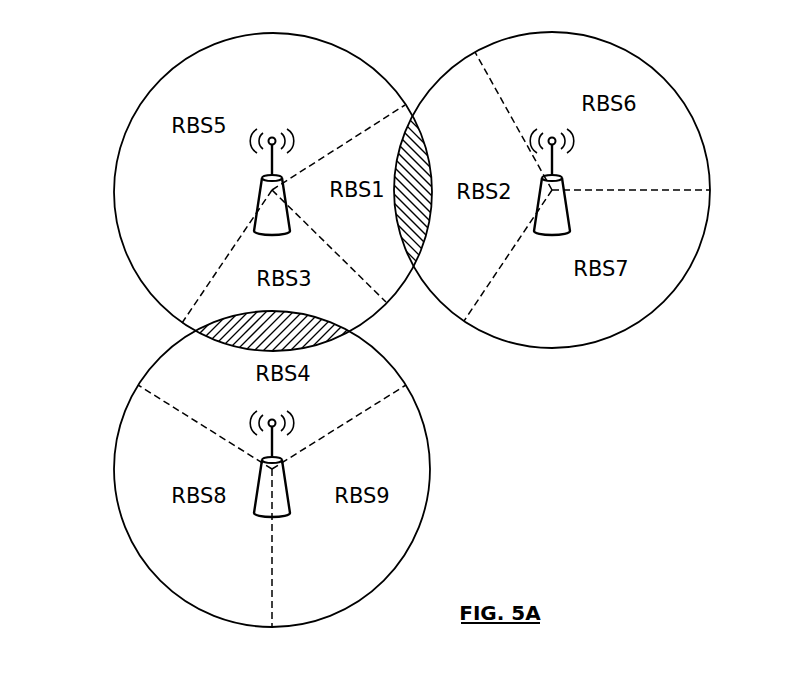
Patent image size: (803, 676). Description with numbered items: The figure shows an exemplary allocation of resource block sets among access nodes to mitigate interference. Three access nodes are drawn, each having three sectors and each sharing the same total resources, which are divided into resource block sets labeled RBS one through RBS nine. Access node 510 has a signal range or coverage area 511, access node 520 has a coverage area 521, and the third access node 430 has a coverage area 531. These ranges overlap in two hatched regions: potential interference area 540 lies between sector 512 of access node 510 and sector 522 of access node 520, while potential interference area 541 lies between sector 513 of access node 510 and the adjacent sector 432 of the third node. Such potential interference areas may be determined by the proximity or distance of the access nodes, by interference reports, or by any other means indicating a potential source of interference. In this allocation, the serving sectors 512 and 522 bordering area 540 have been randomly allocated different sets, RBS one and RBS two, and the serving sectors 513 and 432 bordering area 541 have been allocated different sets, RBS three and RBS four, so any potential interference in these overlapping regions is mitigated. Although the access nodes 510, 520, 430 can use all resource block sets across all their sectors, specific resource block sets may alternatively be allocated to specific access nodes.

The access node 510 is at (262, 190).
The coverage area 511 is at (118, 227).
The sector 512 is at (377, 120).
The sector 513 is at (228, 257).
The access node 520 is at (570, 215).
The coverage area 521 is at (705, 233).
The sector 522 is at (500, 95).
The radio base station antenna of third cell 430 is at (262, 517).
The sector boundary line of third cell 432 is at (338, 430).
The coverage area 531 is at (177, 593).
The potential interference area 540 is at (412, 233).
The potential interference area 541 is at (255, 328).